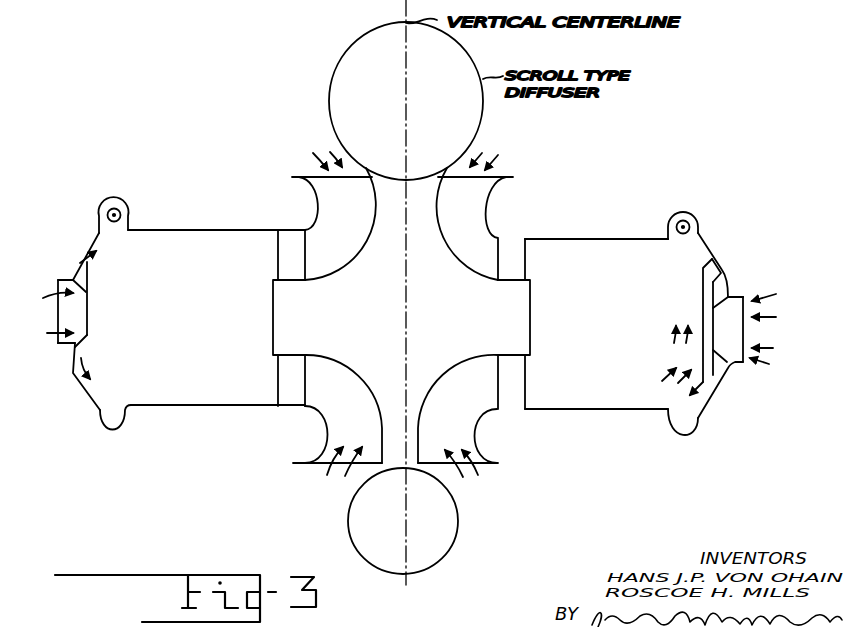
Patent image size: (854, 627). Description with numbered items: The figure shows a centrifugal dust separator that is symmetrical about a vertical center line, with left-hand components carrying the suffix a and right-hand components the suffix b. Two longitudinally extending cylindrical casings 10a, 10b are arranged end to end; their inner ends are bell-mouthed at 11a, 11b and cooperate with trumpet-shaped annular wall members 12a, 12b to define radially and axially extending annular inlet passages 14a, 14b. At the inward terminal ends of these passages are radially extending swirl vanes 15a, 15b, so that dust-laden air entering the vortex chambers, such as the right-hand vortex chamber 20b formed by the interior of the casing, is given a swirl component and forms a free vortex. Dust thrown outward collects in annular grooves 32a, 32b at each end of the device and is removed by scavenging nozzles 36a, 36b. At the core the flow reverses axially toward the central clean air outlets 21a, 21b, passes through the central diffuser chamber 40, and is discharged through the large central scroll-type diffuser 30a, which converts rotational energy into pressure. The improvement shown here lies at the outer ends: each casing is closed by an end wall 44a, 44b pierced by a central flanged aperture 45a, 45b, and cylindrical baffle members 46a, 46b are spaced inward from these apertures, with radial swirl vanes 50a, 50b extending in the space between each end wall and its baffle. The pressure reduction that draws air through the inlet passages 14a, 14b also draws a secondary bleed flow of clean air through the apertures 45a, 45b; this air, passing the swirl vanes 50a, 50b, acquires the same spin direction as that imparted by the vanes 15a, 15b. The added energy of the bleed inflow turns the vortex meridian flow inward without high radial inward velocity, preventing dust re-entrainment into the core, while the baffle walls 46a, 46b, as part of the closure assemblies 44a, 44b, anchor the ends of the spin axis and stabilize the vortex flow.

The cylindrical casing 10a is at (193, 409).
The cylindrical casing 10b is at (576, 410).
The bell-mouthed inner end 11a is at (305, 195).
The bell-mouthed inner end 11b is at (488, 207).
The trumpet-shaped annular wall member 12a is at (340, 262).
The trumpet-shaped annular wall member 12b is at (441, 269).
The annular inlet passage 14a is at (348, 212).
The annular inlet passage 14b is at (458, 221).
The swirl vanes 15a is at (287, 251).
The swirl vanes 15b is at (519, 263).
The vortex chamber 20b is at (619, 283).
The central clean air outlet 21a is at (273, 322).
The central clean air outlet 21b is at (530, 327).
The scroll-type diffuser 30a is at (340, 62).
The annular groove 32a is at (112, 431).
The annular groove 32b is at (688, 438).
The scavenging nozzle 36a is at (127, 214).
The scavenging nozzle 36b is at (693, 219).
The central diffuser chamber 40 is at (404, 317).
The end wall 44a is at (92, 240).
The end wall 44b is at (712, 407).
The central flanged aperture 45a is at (65, 346).
The central flanged aperture 45b is at (735, 368).
The cylindrical baffle member 46a is at (92, 305).
The cylindrical baffle member 46b is at (703, 299).
The swirl vanes 50a is at (84, 346).
The swirl vanes 50b is at (720, 268).